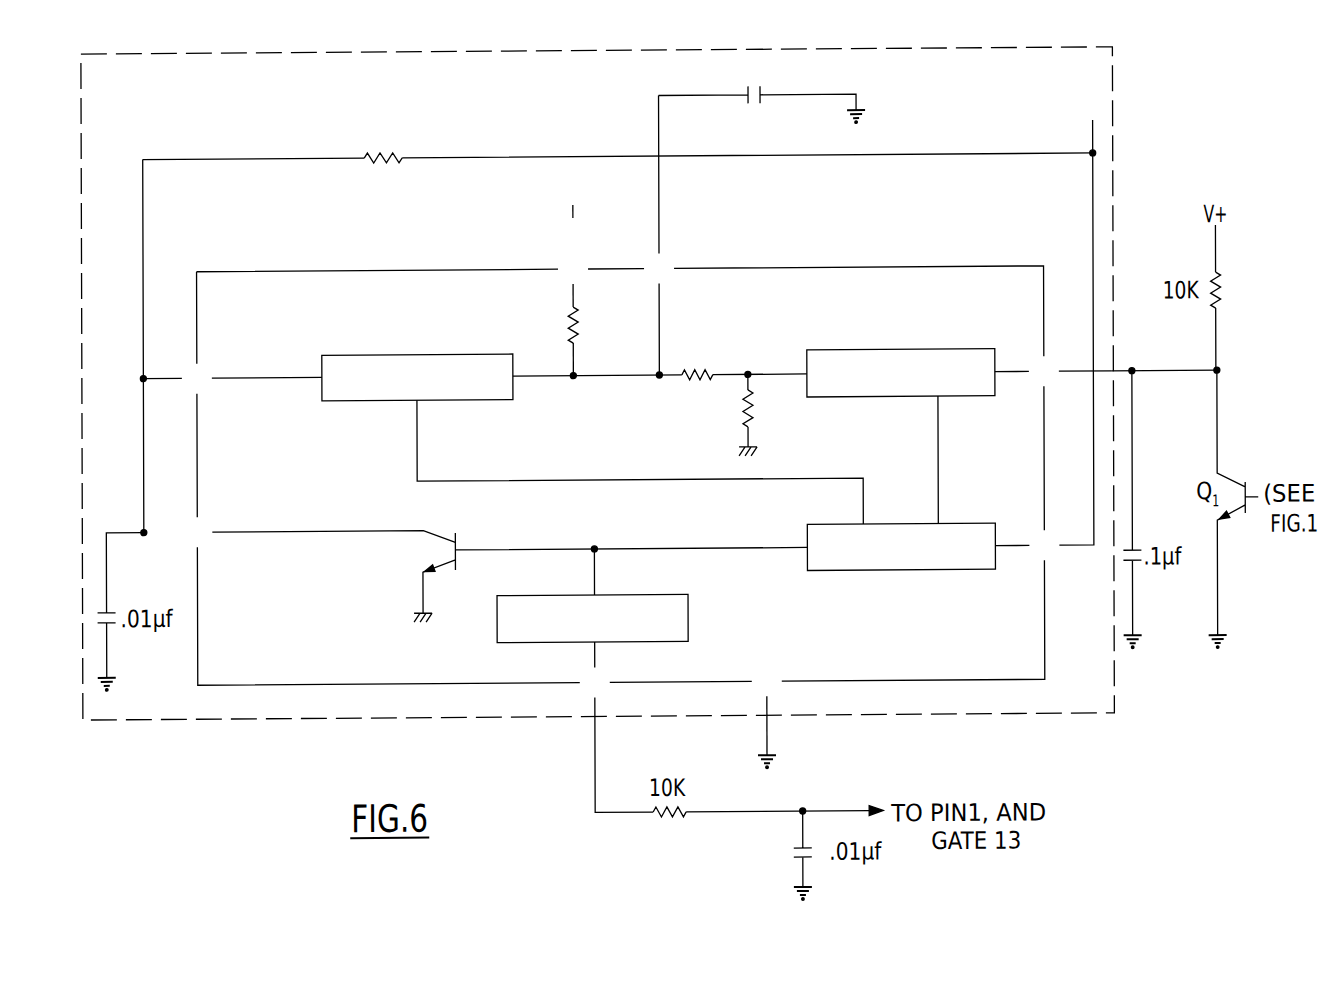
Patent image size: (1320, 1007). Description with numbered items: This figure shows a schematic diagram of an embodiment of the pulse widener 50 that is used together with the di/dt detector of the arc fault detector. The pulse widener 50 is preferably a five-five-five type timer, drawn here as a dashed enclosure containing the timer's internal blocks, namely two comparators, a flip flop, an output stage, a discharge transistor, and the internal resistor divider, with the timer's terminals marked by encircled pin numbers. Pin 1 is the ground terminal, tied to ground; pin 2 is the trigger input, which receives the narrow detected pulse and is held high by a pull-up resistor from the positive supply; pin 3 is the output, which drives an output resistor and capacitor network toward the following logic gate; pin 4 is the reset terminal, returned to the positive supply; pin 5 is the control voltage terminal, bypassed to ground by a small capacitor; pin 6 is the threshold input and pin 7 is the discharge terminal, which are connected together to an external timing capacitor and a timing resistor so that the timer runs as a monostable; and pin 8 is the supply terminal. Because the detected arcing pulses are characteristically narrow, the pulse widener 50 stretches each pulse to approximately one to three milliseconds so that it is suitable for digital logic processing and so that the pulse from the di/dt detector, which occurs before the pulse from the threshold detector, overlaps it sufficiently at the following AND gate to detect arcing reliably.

The pulse widener 50 is at (1169, 112).
The ground pin 1 is at (767, 717).
The trigger pin 2 is at (1053, 371).
The output pin 3 is at (595, 679).
The reset pin 4 is at (1027, 545).
The control voltage pin 5 is at (706, 235).
The threshold pin 6 is at (232, 392).
The discharge pin 7 is at (318, 541).
The Vcc supply pin 8 is at (572, 242).